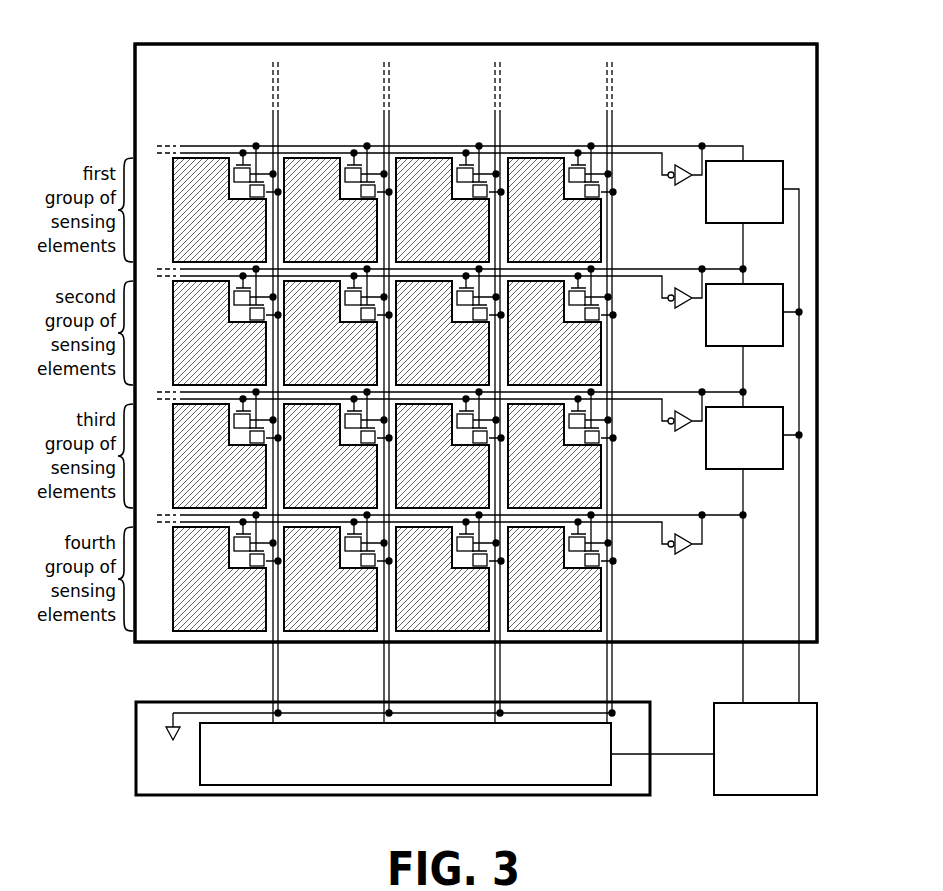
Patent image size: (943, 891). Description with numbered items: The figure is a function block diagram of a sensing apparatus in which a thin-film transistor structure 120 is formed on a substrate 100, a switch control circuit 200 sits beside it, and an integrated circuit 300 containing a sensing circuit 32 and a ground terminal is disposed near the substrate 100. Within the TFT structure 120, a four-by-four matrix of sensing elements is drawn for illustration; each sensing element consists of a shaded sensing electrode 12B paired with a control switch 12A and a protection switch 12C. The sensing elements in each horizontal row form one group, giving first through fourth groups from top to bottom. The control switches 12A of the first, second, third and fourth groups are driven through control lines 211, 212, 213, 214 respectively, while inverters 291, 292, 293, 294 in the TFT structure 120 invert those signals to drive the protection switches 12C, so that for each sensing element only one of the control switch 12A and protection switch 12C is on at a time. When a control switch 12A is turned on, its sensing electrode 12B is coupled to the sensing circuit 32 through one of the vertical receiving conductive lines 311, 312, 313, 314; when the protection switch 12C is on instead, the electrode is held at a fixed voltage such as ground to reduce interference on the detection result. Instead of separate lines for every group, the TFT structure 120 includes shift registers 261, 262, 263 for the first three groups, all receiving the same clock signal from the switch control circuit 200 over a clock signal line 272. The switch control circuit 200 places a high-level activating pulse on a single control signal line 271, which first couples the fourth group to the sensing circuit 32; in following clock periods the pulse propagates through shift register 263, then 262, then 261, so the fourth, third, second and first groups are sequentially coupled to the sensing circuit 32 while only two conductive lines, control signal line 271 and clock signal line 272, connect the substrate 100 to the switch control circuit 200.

The substrate 100 is at (779, 43).
The thin-film transistor structure 120 is at (176, 71).
The TFT switch (control switch) 12A is at (238, 161).
The sensing electrode 12B is at (184, 214).
The TFT switch (protection switch) 12C is at (260, 184).
The control line 211 is at (645, 145).
The control line 212 is at (645, 268).
The control line 213 is at (645, 391).
The control line 214 is at (645, 514).
The shift register 261 is at (762, 160).
The shift register 262 is at (762, 283).
The shift register 263 is at (762, 406).
The inverter 291 is at (675, 186).
The inverter 292 is at (675, 309).
The inverter 293 is at (675, 432).
The inverter 294 is at (675, 555).
The receiving conductive line 311 is at (272, 676).
The receiving conductive line 312 is at (383, 676).
The receiving conductive line 313 is at (494, 680).
The receiving conductive line 314 is at (606, 676).
The control signal line 271 is at (742, 674).
The clock signal line 272 is at (800, 689).
The switch control circuit 200 is at (713, 703).
The integrated circuit 300 is at (136, 728).
The sensing circuit 32 is at (413, 787).